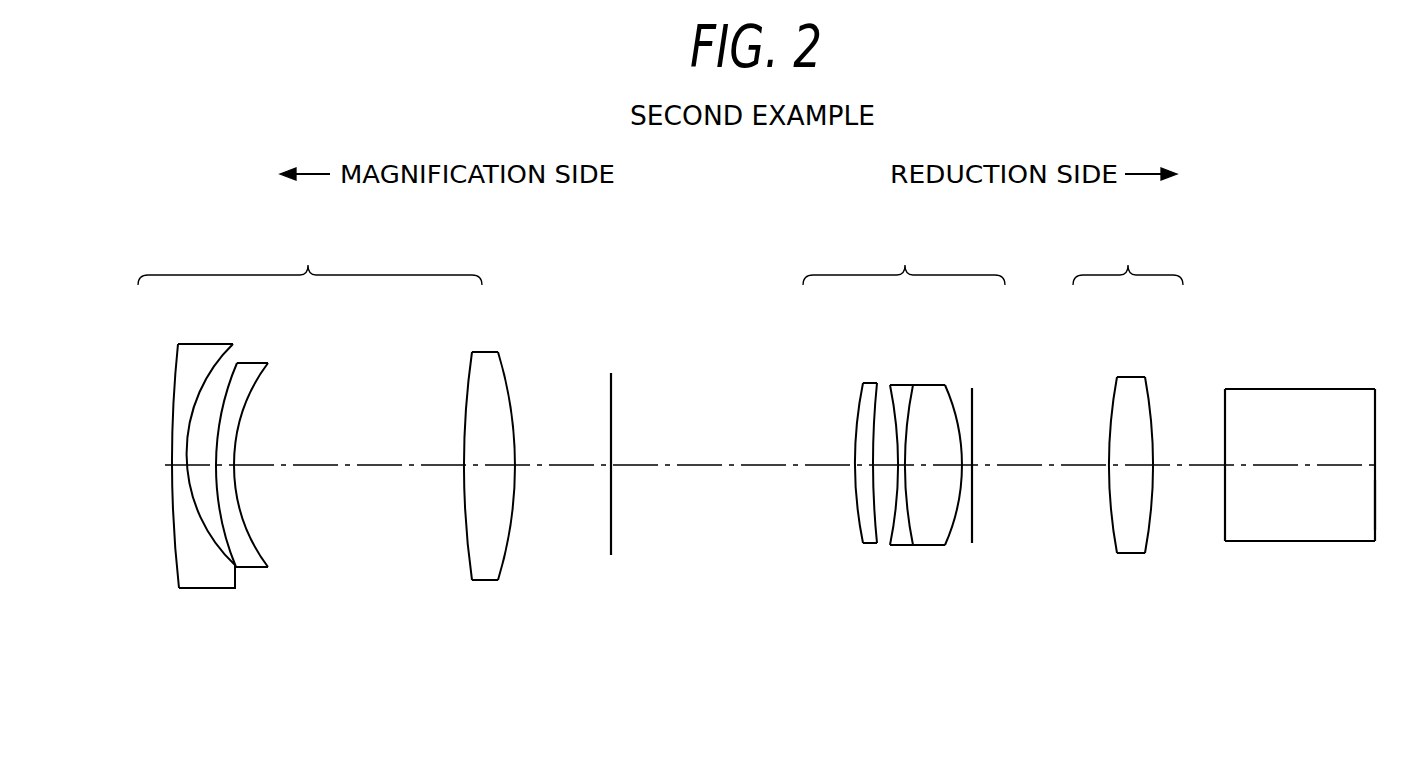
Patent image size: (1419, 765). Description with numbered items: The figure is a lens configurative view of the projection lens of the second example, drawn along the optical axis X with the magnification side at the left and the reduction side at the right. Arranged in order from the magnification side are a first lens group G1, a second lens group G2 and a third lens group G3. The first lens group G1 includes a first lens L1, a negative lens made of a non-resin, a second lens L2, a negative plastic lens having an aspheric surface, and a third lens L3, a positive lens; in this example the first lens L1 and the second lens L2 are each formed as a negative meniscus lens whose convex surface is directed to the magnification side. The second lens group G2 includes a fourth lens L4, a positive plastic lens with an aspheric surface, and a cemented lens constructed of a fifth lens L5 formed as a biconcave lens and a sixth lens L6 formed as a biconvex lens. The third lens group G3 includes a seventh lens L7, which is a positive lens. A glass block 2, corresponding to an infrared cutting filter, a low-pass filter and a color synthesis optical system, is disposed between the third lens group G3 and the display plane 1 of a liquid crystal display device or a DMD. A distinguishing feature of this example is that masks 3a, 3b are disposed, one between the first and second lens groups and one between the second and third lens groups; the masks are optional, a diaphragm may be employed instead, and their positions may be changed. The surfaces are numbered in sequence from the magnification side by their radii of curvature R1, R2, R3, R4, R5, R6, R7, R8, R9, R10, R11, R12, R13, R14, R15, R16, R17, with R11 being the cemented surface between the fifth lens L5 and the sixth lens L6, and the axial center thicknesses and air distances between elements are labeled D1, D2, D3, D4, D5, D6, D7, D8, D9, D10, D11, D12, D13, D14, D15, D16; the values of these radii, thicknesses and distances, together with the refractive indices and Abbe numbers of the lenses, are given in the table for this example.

The display plane 1 is at (1375, 505).
The glass block 2 is at (1303, 469).
The mask 3a is at (627, 464).
The mask 3b is at (1023, 501).
The optical axis X is at (687, 460).
The first lens group G1 is at (301, 444).
The second lens group G2 is at (894, 432).
The third lens group G3 is at (1132, 428).
The first lens L1 is at (177, 489).
The second lens L2 is at (259, 474).
The third lens L3 is at (482, 494).
The fourth lens L4 is at (839, 501).
The fifth lens L5 is at (890, 476).
The sixth lens L6 is at (953, 472).
The seventh lens L7 is at (1132, 499).
The lens surface radius of curvature R1 is at (170, 445).
The lens surface radius of curvature R2 is at (207, 400).
The lens surface radius of curvature R3 is at (219, 435).
The lens surface radius of curvature R4 is at (236, 452).
The lens surface radius of curvature R5 is at (464, 450).
The lens surface radius of curvature R6 is at (514, 440).
The lens surface radius of curvature R7 is at (612, 410).
The lens surface radius of curvature R8 is at (855, 455).
The lens surface radius of curvature R9 is at (876, 438).
The lens surface radius of curvature R10 is at (896, 420).
The lens surface radius of curvature R11 is at (905, 420).
The lens surface radius of curvature R12 is at (956, 415).
The lens surface radius of curvature R13 is at (975, 432).
The lens surface radius of curvature R14 is at (1109, 456).
The lens surface radius of curvature R15 is at (1153, 462).
The lens surface radius of curvature R16 is at (1225, 405).
The lens surface radius of curvature R17 is at (1375, 410).
The center thickness D1 is at (190, 478).
The air distance D2 is at (190, 507).
The center thickness D3 is at (225, 475).
The air distance D4 is at (374, 485).
The center thickness D5 is at (491, 485).
The air distance D6 is at (556, 485).
The air distance D7 is at (724, 485).
The center thickness D8 is at (853, 478).
The air distance D9 is at (873, 500).
The center thickness D10 is at (893, 495).
The center thickness D11 is at (935, 484).
The air distance D12 is at (980, 497).
The air distance D13 is at (1042, 485).
The center thickness D14 is at (1127, 472).
The air distance D15 is at (1182, 485).
The center thickness D16 is at (1298, 485).